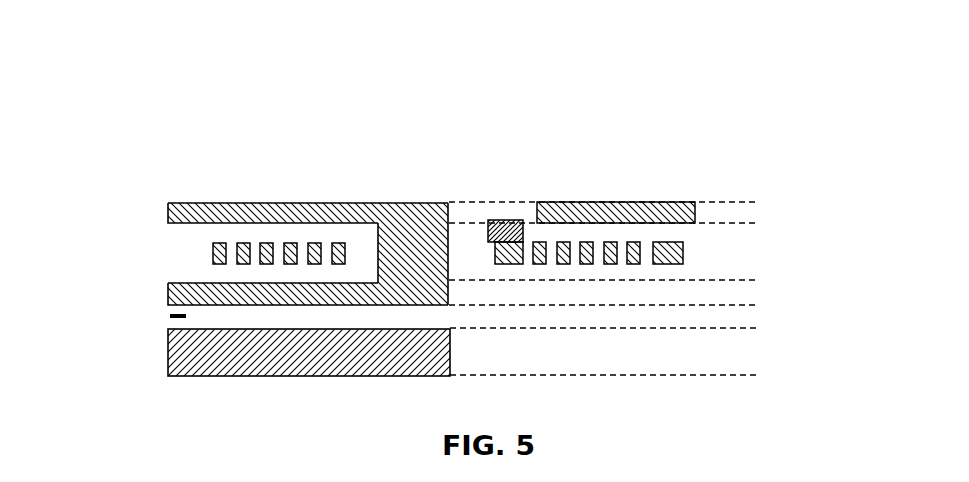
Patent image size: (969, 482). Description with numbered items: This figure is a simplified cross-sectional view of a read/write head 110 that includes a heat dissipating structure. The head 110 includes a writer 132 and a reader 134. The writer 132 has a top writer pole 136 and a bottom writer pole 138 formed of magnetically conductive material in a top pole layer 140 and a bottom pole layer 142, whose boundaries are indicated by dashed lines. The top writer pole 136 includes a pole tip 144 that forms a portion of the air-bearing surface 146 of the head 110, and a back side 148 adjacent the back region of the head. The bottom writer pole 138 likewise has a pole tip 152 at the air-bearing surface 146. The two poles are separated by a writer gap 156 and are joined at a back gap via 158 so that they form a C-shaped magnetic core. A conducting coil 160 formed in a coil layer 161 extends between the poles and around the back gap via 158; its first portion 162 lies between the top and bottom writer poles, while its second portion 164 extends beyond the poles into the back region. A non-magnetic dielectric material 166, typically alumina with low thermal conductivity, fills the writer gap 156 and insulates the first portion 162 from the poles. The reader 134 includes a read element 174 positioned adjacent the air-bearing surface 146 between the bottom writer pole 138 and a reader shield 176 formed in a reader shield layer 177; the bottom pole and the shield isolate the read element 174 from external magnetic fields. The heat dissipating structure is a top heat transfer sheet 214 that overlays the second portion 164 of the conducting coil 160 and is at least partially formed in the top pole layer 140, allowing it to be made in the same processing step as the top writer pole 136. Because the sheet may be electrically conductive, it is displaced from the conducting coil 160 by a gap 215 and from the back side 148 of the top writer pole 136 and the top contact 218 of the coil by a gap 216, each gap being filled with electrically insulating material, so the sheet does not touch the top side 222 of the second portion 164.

The read/write head 110 is at (561, 99).
The writer 132 is at (177, 188).
The reader 134 is at (127, 348).
The top writer pole 136 is at (303, 202).
The bottom writer pole 138 is at (180, 283).
The top pole layer 140 is at (748, 212).
The bottom pole layer 142 is at (750, 290).
The pole tip 144 is at (168, 212).
The air-bearing surface 146 is at (137, 365).
The back side 148 is at (450, 217).
The pole tip 152 is at (168, 295).
The writer gap 156 is at (180, 243).
The back gap via 158 is at (408, 243).
The conducting coil 160 is at (676, 274).
The coil layer 161 is at (750, 252).
The first portion of conducting coil 162 is at (257, 235).
The second portion of conducting coil 164 is at (594, 274).
The non-magnetic dielectric material 166 is at (205, 232).
The read element 174 is at (170, 317).
The reader shield 176 is at (313, 377).
The reader shield layer 177 is at (745, 357).
The top heat transfer sheet 214 is at (635, 200).
The gap 215 is at (650, 238).
The gap 216 is at (487, 207).
The top contact 218 is at (507, 222).
The top side 222 is at (590, 238).